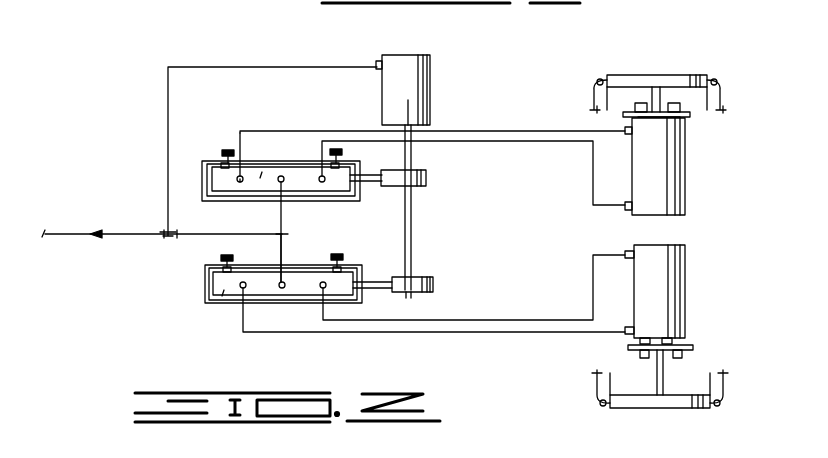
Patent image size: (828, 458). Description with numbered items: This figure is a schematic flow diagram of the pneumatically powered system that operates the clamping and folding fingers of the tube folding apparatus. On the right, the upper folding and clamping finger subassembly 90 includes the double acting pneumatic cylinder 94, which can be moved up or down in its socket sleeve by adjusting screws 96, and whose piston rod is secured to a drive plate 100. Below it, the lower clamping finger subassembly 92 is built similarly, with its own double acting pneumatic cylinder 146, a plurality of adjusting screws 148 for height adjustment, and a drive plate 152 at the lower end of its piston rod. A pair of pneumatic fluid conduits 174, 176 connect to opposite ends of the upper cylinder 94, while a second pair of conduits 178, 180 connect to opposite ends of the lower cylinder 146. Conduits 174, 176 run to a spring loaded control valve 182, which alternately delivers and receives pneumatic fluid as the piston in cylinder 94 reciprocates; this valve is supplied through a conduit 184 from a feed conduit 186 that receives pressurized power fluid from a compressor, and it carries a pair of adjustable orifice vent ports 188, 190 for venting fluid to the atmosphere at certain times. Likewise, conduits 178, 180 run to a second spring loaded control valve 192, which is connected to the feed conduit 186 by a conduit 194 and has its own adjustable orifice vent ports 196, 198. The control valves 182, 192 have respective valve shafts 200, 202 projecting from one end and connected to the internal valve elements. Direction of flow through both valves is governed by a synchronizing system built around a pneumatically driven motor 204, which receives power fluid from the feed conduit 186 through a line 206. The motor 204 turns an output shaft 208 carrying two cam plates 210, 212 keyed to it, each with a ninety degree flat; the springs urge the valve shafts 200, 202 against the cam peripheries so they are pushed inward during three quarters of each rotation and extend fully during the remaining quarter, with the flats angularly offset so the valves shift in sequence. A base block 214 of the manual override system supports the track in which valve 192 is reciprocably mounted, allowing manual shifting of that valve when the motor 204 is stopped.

The upper folding and clamping finger subassembly 90 is at (658, 108).
The lower clamping finger subassembly 92 is at (687, 343).
The pneumatic cylinder 94 is at (665, 145).
The adjusting screws 96 is at (638, 102).
The drive plate 100 is at (676, 78).
The pneumatic cylinder 146 is at (666, 262).
The adjusting screws 148 is at (680, 355).
The drive plate 152 is at (657, 406).
The pneumatic fluid conduit 174 is at (480, 131).
The pneumatic fluid conduit 176 is at (494, 142).
The pneumatic fluid conduit 178 is at (498, 320).
The pneumatic fluid conduit 180 is at (484, 333).
The spring loaded control valve 182 is at (271, 157).
The conduit 184 is at (280, 212).
The feed conduit 186 is at (128, 232).
The adjustable orifice vent port 188 is at (352, 128).
The adjustable orifice vent port 190 is at (228, 148).
The spring loaded control valve 192 is at (215, 305).
The conduit 194 is at (285, 248).
The adjustable orifice vent port 196 is at (218, 257).
The adjustable orifice vent port 198 is at (341, 257).
The valve shaft 200 is at (370, 163).
The valve shaft 202 is at (365, 297).
The pneumatically driven motor 204 is at (415, 72).
The line 206 is at (266, 67).
The output shaft 208 is at (412, 228).
The cam plate 210 is at (426, 178).
The cam plate 212 is at (434, 283).
The base block 214 is at (321, 200).